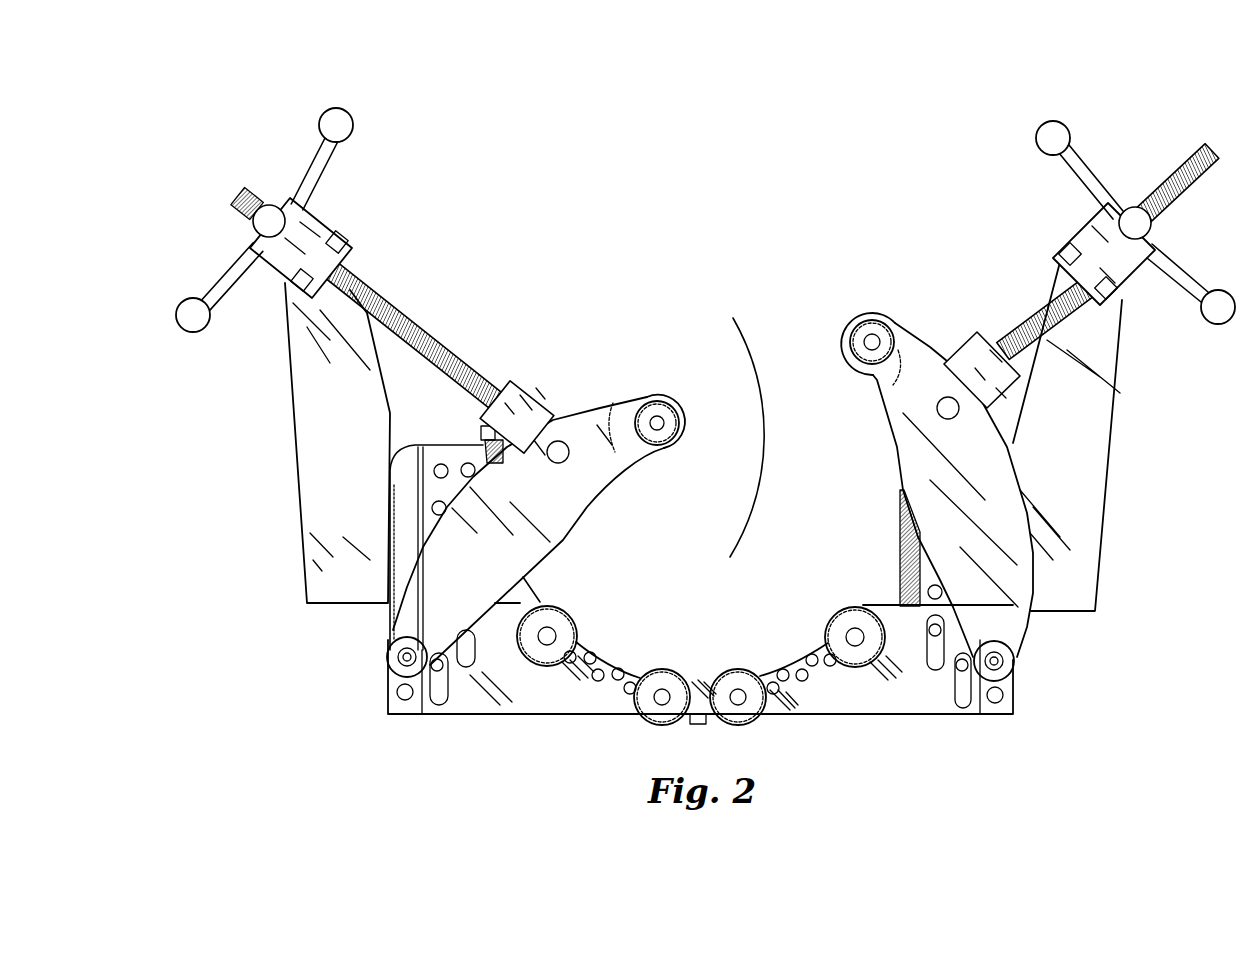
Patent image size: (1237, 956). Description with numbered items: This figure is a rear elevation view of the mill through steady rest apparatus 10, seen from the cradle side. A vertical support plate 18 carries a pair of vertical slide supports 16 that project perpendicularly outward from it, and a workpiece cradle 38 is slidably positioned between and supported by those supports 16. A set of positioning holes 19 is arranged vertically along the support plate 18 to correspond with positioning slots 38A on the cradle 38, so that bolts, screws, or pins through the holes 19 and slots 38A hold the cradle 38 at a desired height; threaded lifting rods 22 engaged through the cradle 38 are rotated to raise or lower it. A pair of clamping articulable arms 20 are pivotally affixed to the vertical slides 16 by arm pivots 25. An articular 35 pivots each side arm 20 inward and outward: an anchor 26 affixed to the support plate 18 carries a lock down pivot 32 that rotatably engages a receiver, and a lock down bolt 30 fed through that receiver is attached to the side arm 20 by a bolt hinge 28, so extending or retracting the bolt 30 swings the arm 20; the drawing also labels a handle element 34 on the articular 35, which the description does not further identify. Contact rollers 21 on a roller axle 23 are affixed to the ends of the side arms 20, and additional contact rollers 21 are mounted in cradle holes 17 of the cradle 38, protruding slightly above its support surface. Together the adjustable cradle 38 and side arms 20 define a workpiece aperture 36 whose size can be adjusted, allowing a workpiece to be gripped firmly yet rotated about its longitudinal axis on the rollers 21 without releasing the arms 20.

The mill through steady rest apparatus 10 is at (820, 105).
The vertical slide supports 16 is at (403, 553).
The cradle holes 17 is at (600, 648).
The vertical support plate 18 is at (473, 457).
The positioning holes 19 is at (462, 468).
The clamping articulable arms 20 is at (595, 415).
The contact rollers 21 is at (880, 320).
The threaded lifting rods 22 is at (900, 565).
The roller axle 23 is at (655, 705).
The arm pivots 25 is at (400, 657).
The anchor 26 is at (320, 487).
The bolt hinge 28 is at (972, 355).
The lock down bolt 30 is at (403, 307).
The lock down pivot 32 is at (1065, 250).
The handle ball 34 is at (340, 110).
The articular 35 is at (200, 210).
The workpiece aperture 36 is at (739, 425).
The workpiece cradle 38 is at (540, 700).
The positioning slots 38A is at (418, 712).